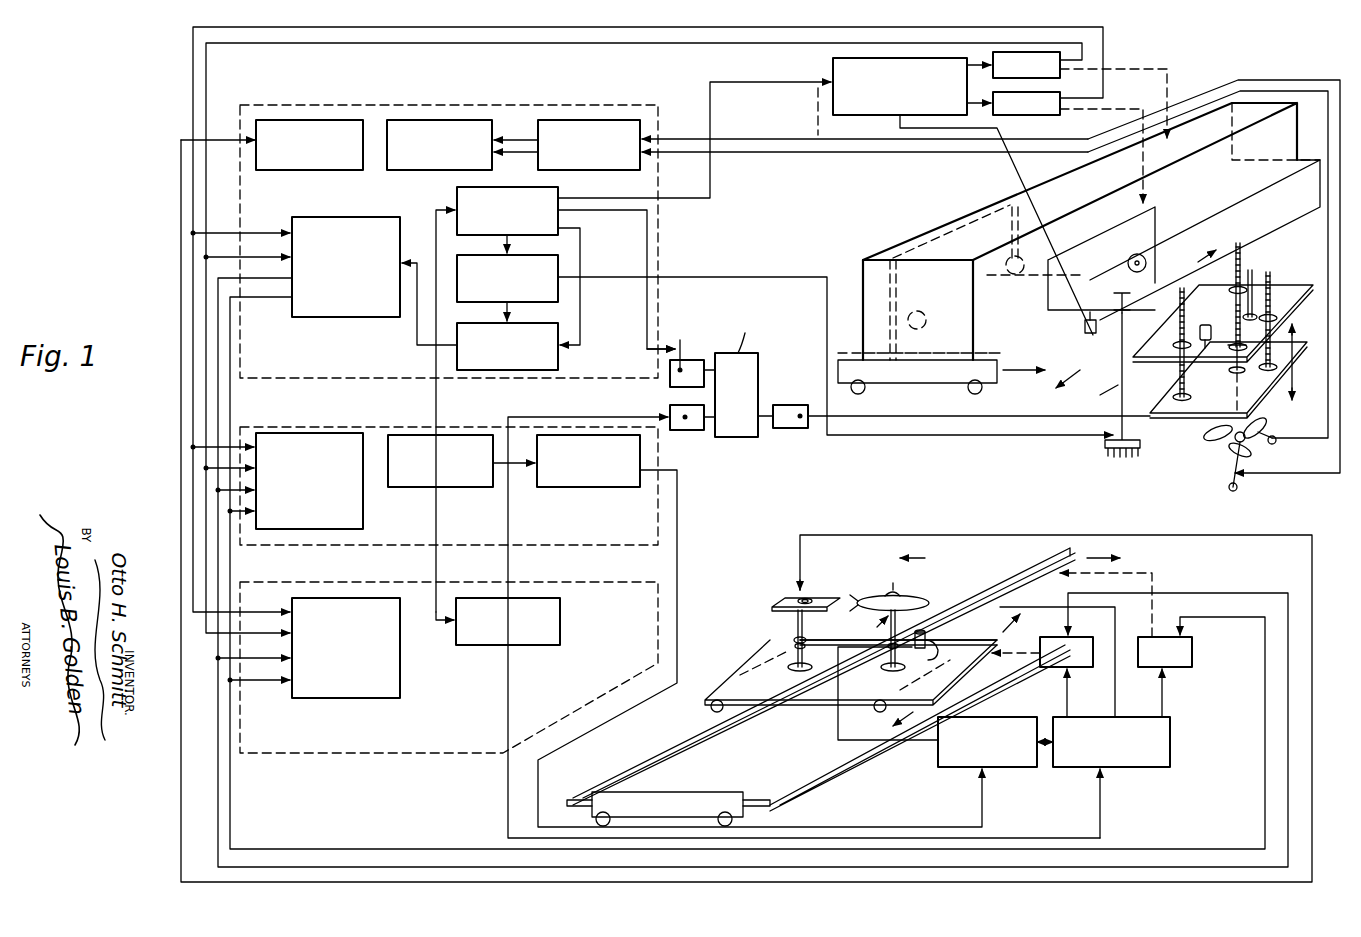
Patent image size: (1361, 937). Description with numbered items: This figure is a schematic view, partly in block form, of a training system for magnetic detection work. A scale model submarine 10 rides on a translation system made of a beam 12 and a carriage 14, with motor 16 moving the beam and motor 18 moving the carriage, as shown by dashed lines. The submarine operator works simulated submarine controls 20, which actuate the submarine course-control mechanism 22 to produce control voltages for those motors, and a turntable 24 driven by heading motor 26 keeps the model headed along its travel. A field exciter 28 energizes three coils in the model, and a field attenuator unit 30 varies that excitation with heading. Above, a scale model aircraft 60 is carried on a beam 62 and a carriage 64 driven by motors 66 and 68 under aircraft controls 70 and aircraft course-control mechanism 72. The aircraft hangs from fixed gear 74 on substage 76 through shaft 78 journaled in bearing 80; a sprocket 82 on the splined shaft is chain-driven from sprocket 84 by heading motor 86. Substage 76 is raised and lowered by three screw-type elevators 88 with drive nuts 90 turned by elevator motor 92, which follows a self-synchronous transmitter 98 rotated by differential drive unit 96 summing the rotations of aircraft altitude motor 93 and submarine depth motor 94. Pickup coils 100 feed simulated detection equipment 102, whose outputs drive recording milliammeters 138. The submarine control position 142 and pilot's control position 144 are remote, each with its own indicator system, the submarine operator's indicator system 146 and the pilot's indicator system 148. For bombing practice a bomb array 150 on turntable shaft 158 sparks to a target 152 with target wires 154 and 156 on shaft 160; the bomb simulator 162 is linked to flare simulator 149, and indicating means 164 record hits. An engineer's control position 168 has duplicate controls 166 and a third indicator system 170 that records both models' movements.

The scale model submarine 10 is at (918, 600).
The beam 12 is at (685, 745).
The carriage 14 is at (790, 697).
The motor 16 is at (1172, 668).
The motor 18 is at (1073, 668).
The submarine controls 20 is at (561, 604).
The submarine course-control mechanism 22 is at (1171, 752).
The turntable 24 is at (890, 648).
The heading motor 26 is at (940, 622).
The field exciter 28 is at (587, 488).
The field attenuator unit 30 is at (937, 757).
The scale model aircraft 60 is at (1225, 442).
The beam 62 is at (920, 372).
The carriage 64 is at (1082, 381).
The motor 66 is at (1048, 79).
The motor 68 is at (1020, 116).
The aircraft controls 70 is at (498, 175).
The aircraft course-control mechanism 72 is at (882, 116).
The fixed gear 74 is at (1225, 400).
The substage 76 is at (1297, 362).
The shaft 78 is at (1252, 268).
The bearing 80 is at (1235, 395).
The sprocket 82 is at (1228, 300).
The sprocket 84 is at (1128, 318).
The heading motor 86 is at (1097, 335).
The screw-type elevators 88 is at (1178, 300).
The drive nuts 90 is at (1172, 345).
The elevator motor 92 is at (1205, 350).
The aircraft altitude motor 93 is at (672, 386).
The submarine depth motor 94 is at (684, 432).
The differential drive unit 96 is at (730, 438).
The self-synchronous transmitter 98 is at (790, 404).
The pickup coils 100 is at (1294, 430).
The simulated detection equipment 102 is at (590, 172).
The milliammeters 138 is at (435, 171).
The submarine control position 142 is at (660, 603).
The pilot's control position 144 is at (660, 248).
The submarine operator's indicator system 146 is at (401, 666).
The pilot's indicator system 148 is at (312, 318).
The flare simulator 149 is at (532, 310).
The bomb array 150 is at (1110, 452).
The target 152 is at (795, 632).
The target wire 154 is at (810, 598).
The target wire 156 is at (785, 605).
The turntable shaft 158 is at (1095, 401).
The shaft 160 is at (785, 645).
The bomb simulator 162 is at (541, 243).
The indicating means 164 is at (300, 171).
The controls 166 is at (445, 488).
The engineer's control position 168 is at (660, 508).
The indicator system 170 is at (380, 513).